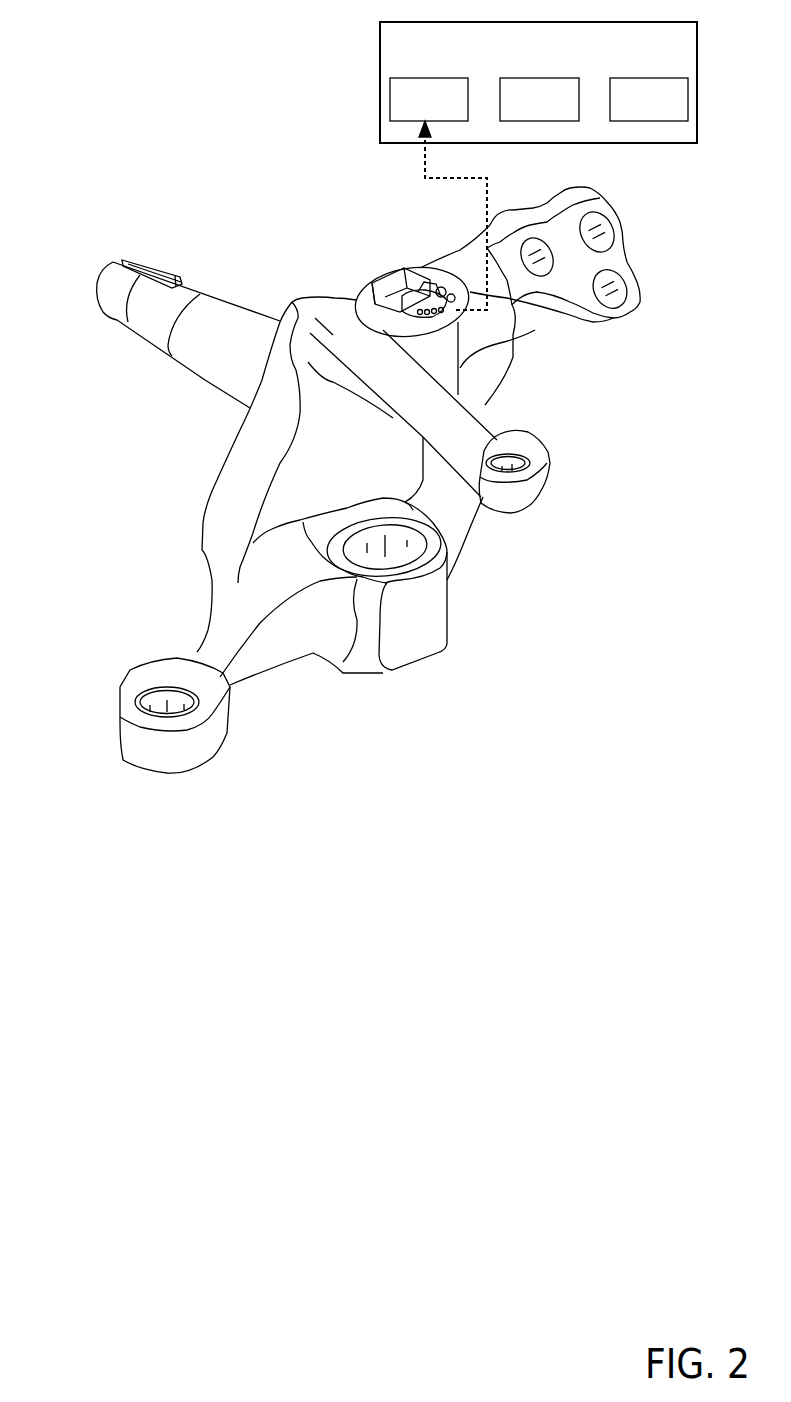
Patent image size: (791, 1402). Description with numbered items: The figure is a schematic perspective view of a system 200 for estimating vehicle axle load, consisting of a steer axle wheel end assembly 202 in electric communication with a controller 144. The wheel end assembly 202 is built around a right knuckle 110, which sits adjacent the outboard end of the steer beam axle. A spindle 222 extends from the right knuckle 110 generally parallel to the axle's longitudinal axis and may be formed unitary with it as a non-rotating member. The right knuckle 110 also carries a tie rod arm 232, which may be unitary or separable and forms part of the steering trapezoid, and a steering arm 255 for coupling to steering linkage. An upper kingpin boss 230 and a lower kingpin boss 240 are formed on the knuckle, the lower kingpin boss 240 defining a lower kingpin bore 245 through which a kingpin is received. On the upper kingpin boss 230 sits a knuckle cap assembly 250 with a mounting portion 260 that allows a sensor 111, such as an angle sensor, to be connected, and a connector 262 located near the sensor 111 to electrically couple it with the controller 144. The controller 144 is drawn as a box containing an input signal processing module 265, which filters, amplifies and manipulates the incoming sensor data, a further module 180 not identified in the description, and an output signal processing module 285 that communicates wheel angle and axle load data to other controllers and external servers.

The system 200 is at (106, 66).
The wheel end assembly 202 is at (287, 199).
The right knuckle 110 is at (283, 291).
The spindle 222 is at (103, 272).
The mounting portion 260 is at (352, 292).
The sensor 111 is at (383, 277).
The knuckle cap assembly 250 is at (403, 252).
The connector 262 is at (540, 340).
The upper kingpin boss 230 is at (458, 368).
The steering arm 255 is at (545, 487).
The lower kingpin bore 245 is at (417, 553).
The lower kingpin boss 240 is at (410, 655).
The tie rod arm 232 is at (190, 657).
The controller 144 is at (538, 82).
The input signal processing module 265 is at (429, 99).
The memory module 180 is at (539, 99).
The output signal processing module 285 is at (649, 99).